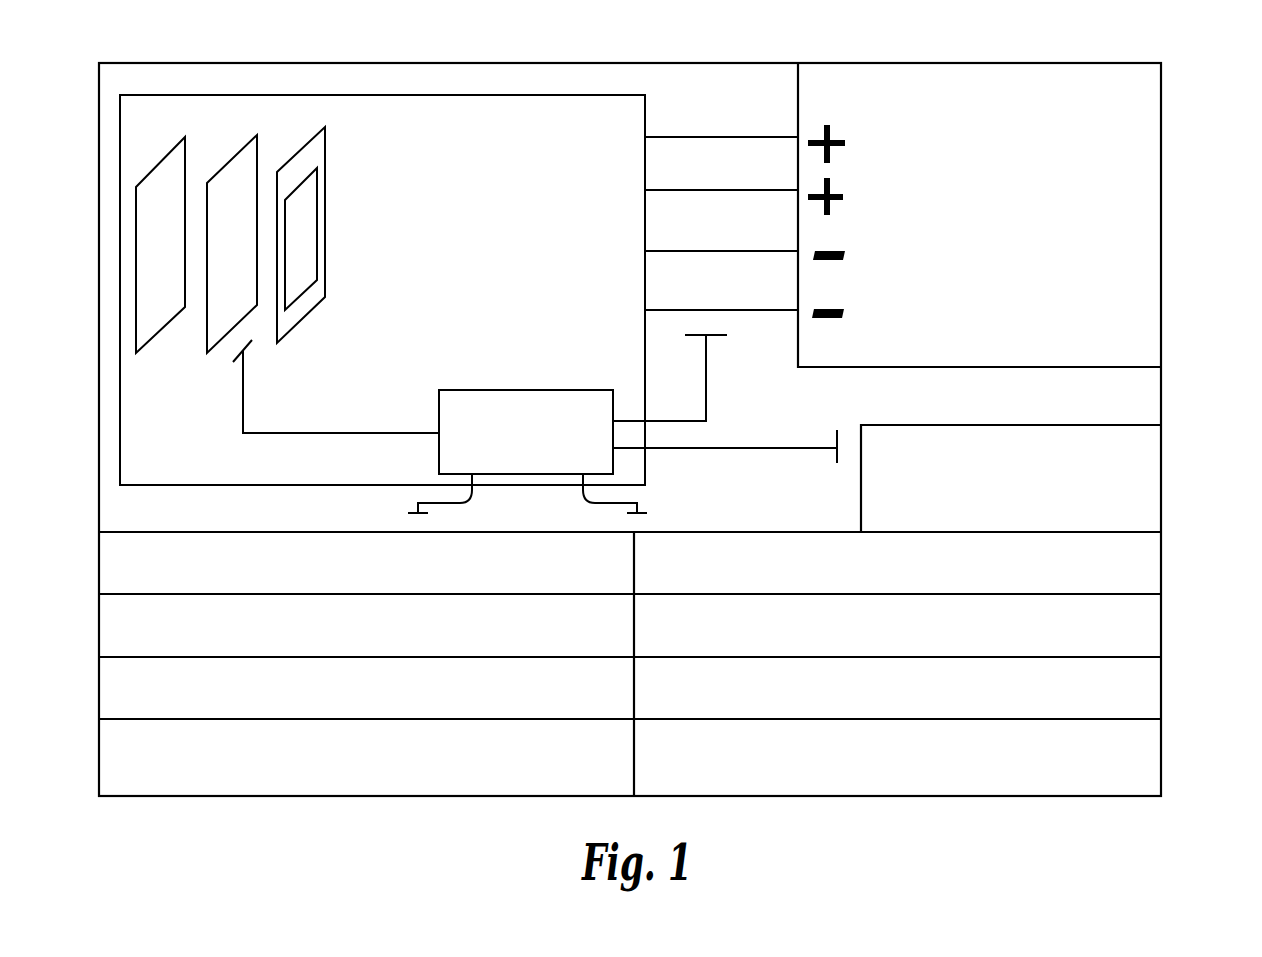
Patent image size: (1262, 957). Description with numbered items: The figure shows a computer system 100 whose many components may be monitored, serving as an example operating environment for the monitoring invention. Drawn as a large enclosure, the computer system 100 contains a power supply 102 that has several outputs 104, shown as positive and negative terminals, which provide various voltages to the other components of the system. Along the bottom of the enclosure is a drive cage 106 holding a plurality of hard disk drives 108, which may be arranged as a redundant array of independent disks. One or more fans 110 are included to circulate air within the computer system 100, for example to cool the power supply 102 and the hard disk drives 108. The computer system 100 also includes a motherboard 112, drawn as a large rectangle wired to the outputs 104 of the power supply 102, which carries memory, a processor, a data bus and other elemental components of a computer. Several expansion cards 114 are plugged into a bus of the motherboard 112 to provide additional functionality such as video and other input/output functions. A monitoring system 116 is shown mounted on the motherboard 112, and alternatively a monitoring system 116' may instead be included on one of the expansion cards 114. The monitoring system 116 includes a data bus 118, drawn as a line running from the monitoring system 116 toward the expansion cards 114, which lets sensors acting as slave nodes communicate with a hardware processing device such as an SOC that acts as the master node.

The computer system 100 is at (945, 812).
The power supply 102 is at (1118, 185).
The outputs 104 is at (858, 130).
The drive cage 106 is at (1139, 574).
The hard disk drives 108 is at (1150, 638).
The fans 110 is at (1155, 490).
The motherboard 112 is at (532, 120).
The expansion cards 114 is at (274, 114).
The monitoring system 116 is at (622, 424).
The monitoring system 116' is at (340, 239).
The data bus 118 is at (335, 428).